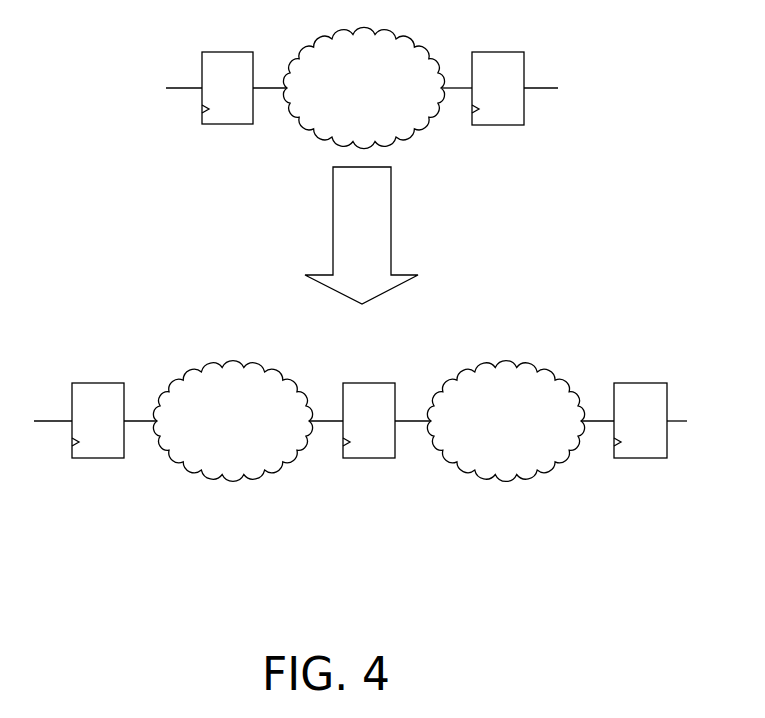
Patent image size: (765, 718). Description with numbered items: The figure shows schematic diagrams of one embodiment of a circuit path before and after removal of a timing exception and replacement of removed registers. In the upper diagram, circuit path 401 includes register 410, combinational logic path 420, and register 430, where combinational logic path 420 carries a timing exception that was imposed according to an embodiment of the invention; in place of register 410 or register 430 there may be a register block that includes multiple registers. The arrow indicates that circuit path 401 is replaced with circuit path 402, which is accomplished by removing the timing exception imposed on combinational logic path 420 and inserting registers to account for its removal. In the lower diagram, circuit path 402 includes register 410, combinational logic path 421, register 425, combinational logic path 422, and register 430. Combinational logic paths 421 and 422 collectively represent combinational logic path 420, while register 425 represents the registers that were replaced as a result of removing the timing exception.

The circuit path 401 is at (254, 27).
The circuit path 402 is at (124, 360).
The register 410 is at (248, 100).
The combinational logic path 420 is at (383, 71).
The combinational logic path 421 is at (253, 432).
The combinational logic path 422 is at (527, 432).
The register 425 is at (389, 431).
The register 430 is at (518, 100).